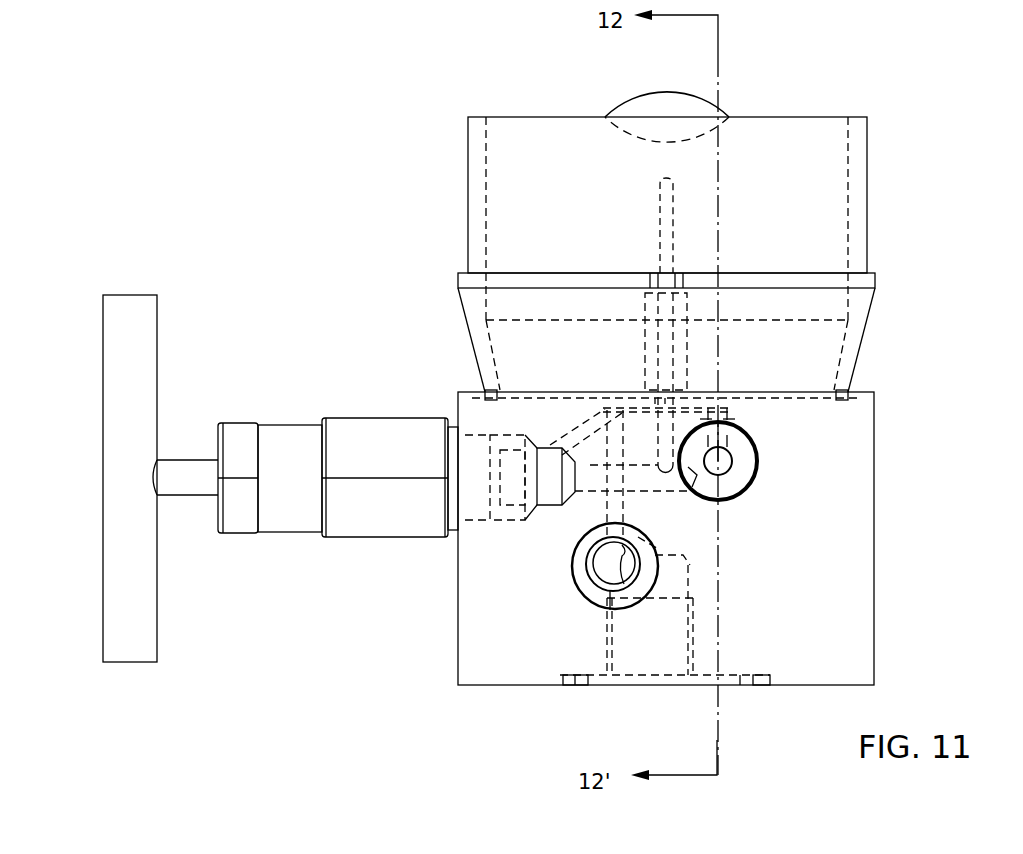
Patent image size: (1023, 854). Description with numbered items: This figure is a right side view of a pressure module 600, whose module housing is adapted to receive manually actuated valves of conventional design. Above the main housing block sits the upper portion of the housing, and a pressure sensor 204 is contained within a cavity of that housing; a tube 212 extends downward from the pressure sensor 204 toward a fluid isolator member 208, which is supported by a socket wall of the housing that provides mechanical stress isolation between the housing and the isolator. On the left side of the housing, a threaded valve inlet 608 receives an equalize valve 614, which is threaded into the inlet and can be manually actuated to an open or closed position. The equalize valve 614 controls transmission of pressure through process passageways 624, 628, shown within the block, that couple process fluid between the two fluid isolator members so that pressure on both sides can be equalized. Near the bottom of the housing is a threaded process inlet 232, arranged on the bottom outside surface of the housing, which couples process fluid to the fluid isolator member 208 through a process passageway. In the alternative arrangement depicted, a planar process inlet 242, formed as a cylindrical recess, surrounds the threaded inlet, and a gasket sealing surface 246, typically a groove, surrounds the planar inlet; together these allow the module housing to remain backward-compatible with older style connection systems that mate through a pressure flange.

The pressure module 600 is at (368, 160).
The pressure sensor 204 is at (636, 101).
The tube 212 is at (660, 206).
The fluid isolator member 208 is at (740, 393).
The process passageway 628 is at (560, 440).
The threaded valve inlet 608 is at (471, 527).
The equalize valve 614 is at (385, 538).
The process passageway 624 is at (663, 490).
The threaded process inlet 232 is at (606, 645).
The planar process inlet 242 is at (647, 682).
The gasket sealing surface 246 is at (760, 685).